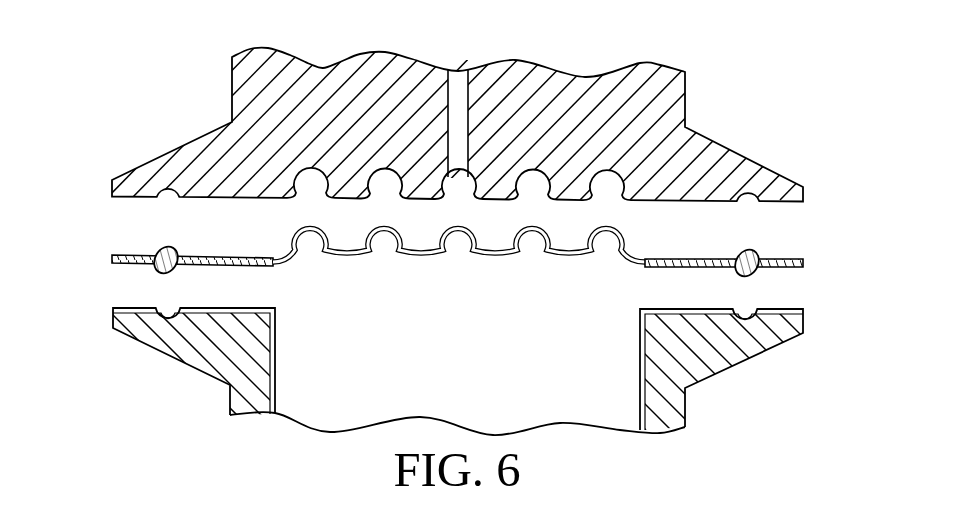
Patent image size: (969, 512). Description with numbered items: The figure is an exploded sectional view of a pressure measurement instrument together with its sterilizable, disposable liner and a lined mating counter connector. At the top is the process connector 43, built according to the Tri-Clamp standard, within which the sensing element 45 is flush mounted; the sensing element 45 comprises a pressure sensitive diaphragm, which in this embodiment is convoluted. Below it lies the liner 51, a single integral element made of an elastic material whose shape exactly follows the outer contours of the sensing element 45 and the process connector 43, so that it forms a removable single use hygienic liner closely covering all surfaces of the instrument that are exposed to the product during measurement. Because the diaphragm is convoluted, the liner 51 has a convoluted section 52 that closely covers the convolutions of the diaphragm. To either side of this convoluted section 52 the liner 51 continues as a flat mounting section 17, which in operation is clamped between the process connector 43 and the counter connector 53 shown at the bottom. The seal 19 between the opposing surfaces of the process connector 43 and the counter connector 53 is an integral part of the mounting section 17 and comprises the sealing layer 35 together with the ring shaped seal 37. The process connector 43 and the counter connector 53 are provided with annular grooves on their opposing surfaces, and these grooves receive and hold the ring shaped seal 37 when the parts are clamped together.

The process connector 43 is at (531, 110).
The sensing element 45 is at (348, 195).
The flat mounting section 17 is at (424, 258).
The sealing layer 35 is at (122, 264).
The ring shaped seal 37 is at (175, 247).
The liner 51 is at (359, 268).
The convoluted section 52 is at (427, 256).
The seal 19 is at (637, 280).
The counter connector 53 is at (192, 353).